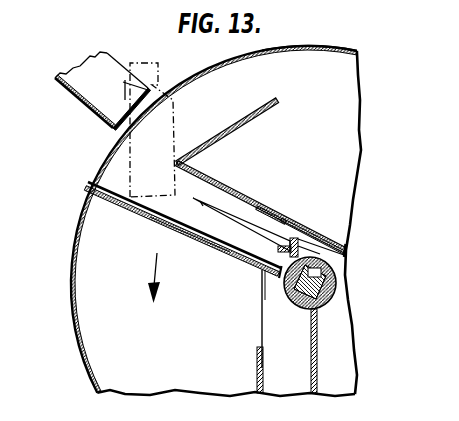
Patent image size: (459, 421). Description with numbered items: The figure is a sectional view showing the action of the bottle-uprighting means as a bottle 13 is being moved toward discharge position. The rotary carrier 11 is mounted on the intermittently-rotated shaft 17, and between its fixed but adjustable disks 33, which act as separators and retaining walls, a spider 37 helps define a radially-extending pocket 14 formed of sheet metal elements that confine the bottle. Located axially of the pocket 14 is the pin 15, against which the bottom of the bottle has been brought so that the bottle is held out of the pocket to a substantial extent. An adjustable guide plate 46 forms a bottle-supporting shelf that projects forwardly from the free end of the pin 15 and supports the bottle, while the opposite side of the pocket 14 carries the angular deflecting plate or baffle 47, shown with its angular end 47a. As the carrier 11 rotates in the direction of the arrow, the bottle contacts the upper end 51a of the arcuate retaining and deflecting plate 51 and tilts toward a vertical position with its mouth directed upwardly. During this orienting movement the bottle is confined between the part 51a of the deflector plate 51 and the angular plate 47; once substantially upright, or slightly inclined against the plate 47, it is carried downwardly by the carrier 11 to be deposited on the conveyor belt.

The rotary carrier 11 is at (349, 43).
The bottle 13 is at (172, 102).
The pocket 14 is at (256, 241).
The pin 15 is at (228, 212).
The shaft 17 is at (318, 257).
The disk 33 is at (303, 49).
The spider 37 is at (193, 243).
The guide plate 46 is at (148, 212).
The angular deflecting plate 47 is at (250, 124).
The arm lower portion 47a is at (183, 160).
The arcuate retaining and deflecting plate 51 is at (73, 288).
The upper end of deflector plate 51a is at (122, 129).